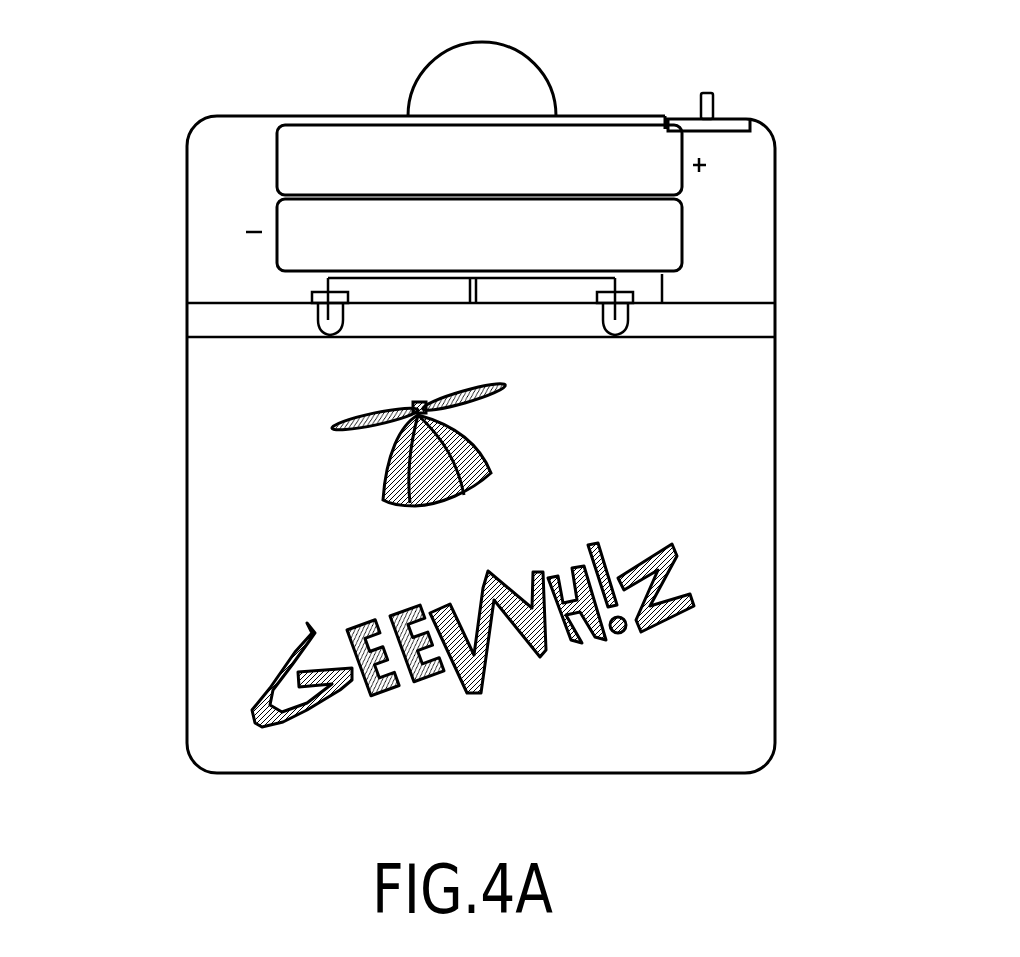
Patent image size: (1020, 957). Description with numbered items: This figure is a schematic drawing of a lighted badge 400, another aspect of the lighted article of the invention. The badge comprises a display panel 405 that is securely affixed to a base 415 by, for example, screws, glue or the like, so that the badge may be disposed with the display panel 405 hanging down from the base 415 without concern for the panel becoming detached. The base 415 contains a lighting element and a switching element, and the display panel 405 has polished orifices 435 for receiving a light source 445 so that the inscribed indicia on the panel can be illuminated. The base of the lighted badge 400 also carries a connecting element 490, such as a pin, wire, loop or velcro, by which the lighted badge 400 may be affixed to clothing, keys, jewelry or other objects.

The lighted badge 400 is at (120, 524).
The display panel 405 is at (753, 458).
The base 415 is at (752, 180).
The polished orifices 435 is at (625, 330).
The light source 445 is at (647, 302).
The connecting element 490 is at (540, 62).